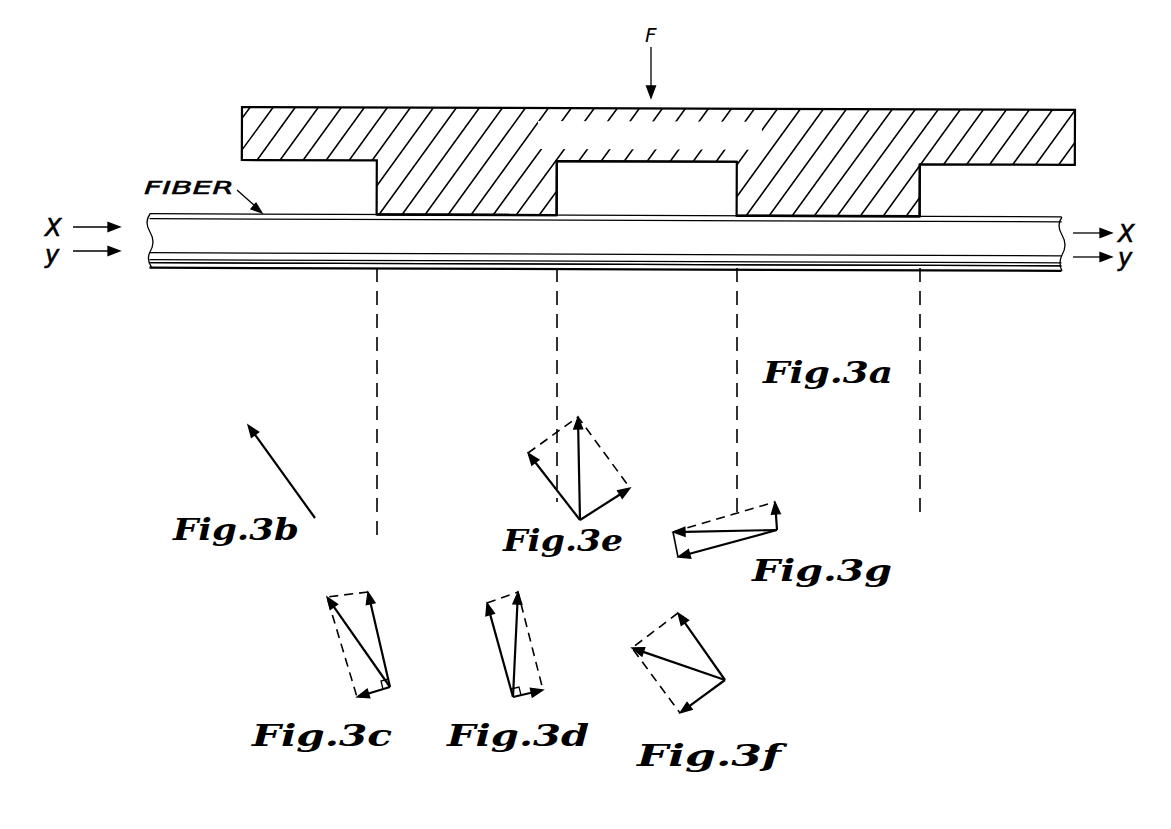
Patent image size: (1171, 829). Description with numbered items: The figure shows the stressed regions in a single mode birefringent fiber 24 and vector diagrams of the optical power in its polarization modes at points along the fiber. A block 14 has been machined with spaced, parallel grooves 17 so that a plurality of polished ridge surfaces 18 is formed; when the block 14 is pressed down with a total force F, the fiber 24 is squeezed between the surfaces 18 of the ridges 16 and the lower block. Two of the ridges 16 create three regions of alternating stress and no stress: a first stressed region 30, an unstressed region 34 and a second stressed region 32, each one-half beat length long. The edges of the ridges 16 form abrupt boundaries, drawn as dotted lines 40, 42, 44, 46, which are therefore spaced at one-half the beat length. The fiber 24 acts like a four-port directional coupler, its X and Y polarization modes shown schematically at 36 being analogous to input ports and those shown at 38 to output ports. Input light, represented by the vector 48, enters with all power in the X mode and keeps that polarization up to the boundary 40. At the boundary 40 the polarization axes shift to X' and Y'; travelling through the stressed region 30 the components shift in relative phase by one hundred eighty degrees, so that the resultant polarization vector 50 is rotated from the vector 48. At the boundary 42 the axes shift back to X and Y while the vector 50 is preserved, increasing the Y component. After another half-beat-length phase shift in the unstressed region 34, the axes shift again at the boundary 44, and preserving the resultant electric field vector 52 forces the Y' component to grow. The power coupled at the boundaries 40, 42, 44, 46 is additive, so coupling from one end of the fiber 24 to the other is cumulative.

In FIG. 3A, the block 14 is at (958, 98).
In FIG. 3A, the ridges 16 is at (548, 196).
In FIG. 3A, the grooves 17 is at (652, 162).
In FIG. 3A, the ridge surfaces 18 is at (482, 224).
In FIG. 3A, the fiber 24 is at (996, 256).
In FIG. 3A, the first stressed region 30 is at (452, 257).
In FIG. 3A, the second stressed region 32 is at (838, 262).
In FIG. 3A, the unstressed region 34 is at (643, 262).
In FIG. 3A, the input polarization modes 36 is at (141, 260).
In FIG. 3A, the output polarization modes 38 is at (1062, 261).
In FIG. 3A, the first boundary 40 is at (373, 231).
In FIG. 3A, the second boundary 42 is at (560, 255).
In FIG. 3A, the third boundary 44 is at (740, 255).
In FIG. 3A, the fourth boundary 46 is at (921, 250).
In FIG. 3B, the input light vector 48 is at (278, 466).
In FIG. 3C, the input light vector 48 is at (352, 640).
In FIG. 3E, the resultant polarization vector 50 is at (582, 452).
In FIG. 3D, the resultant polarization vector 50 is at (514, 638).
In FIG. 3G, the resultant electric field vector 52 is at (722, 528).
In FIG. 3F, the resultant electric field vector 52 is at (700, 661).